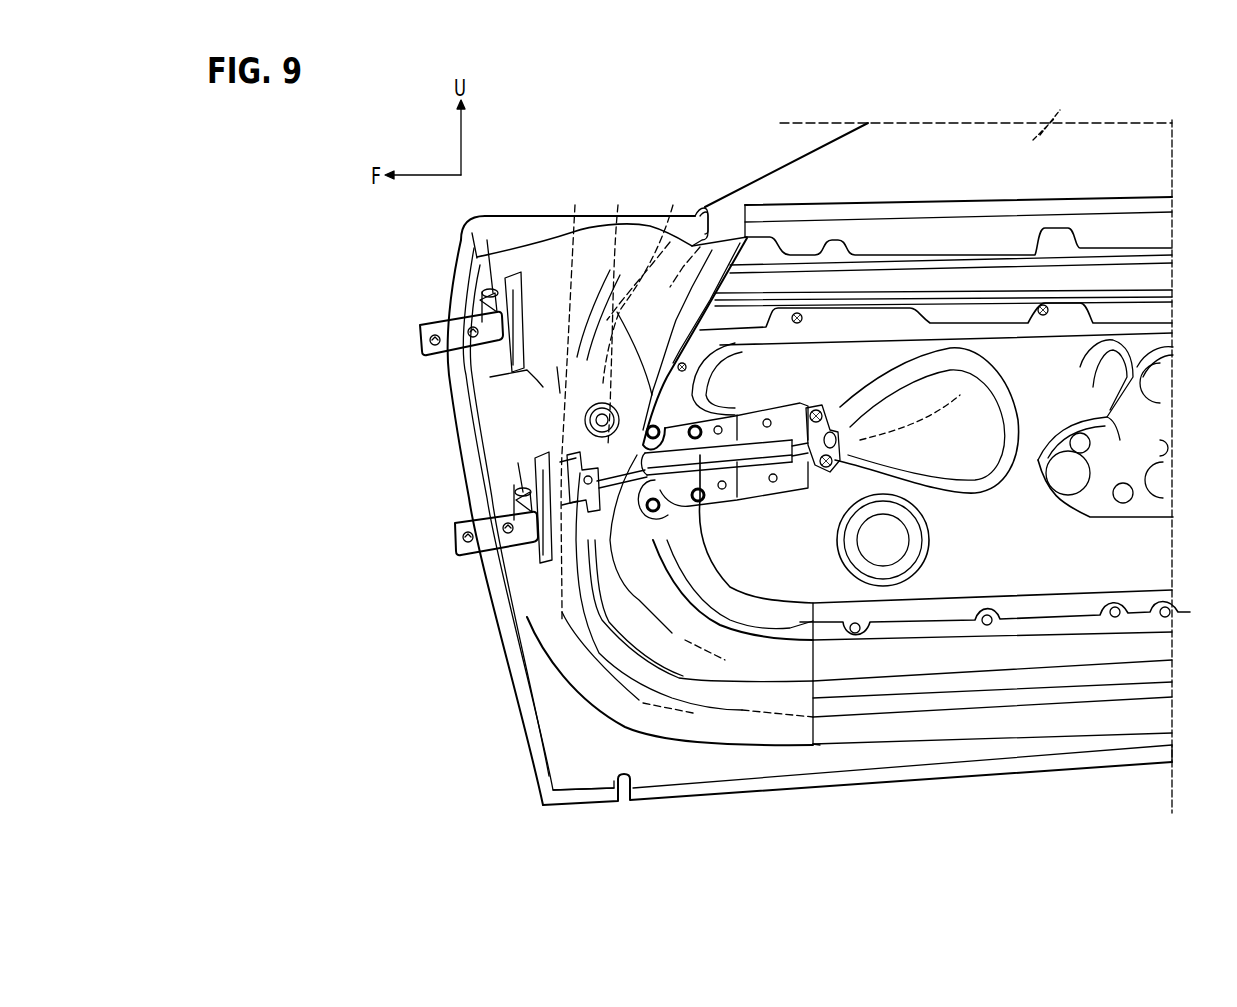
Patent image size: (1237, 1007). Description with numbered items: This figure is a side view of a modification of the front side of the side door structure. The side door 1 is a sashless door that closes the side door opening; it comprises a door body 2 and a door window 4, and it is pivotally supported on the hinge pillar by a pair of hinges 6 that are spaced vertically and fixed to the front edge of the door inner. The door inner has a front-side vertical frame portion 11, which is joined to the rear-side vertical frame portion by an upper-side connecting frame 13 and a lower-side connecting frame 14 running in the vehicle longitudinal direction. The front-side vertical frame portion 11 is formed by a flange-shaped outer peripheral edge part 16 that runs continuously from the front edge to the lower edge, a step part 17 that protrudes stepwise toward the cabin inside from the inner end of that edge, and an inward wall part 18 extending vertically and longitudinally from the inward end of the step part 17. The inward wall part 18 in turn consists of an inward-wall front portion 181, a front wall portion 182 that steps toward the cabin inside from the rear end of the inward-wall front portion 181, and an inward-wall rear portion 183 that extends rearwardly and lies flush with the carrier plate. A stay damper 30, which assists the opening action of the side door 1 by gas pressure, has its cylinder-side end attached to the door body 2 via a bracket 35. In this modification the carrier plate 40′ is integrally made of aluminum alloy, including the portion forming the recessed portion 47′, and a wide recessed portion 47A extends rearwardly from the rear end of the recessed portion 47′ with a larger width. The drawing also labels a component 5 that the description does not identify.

The side door 1 is at (1131, 106).
The door body 2 is at (946, 742).
The door window 4 is at (992, 150).
The door lower flange 5 is at (714, 800).
The hinges 6 is at (490, 281).
The front-side vertical frame portion 11 is at (813, 745).
The upper-side connecting frame 13 is at (1143, 278).
The lower-side connecting frame 14 is at (1093, 735).
The outer peripheral edge part 16 is at (593, 693).
The step part 17 is at (580, 604).
The inward wall part 18 is at (673, 150).
The inward-wall front portion 181 is at (618, 205).
The front wall portion 182 is at (575, 205).
The inward-wall rear portion 183 is at (673, 205).
The stay damper 30 is at (737, 433).
The bracket 35 is at (817, 410).
The carrier plate 40′ is at (1032, 570).
The recessed portion 47′ is at (736, 465).
The wide recessed portion 47A is at (950, 430).